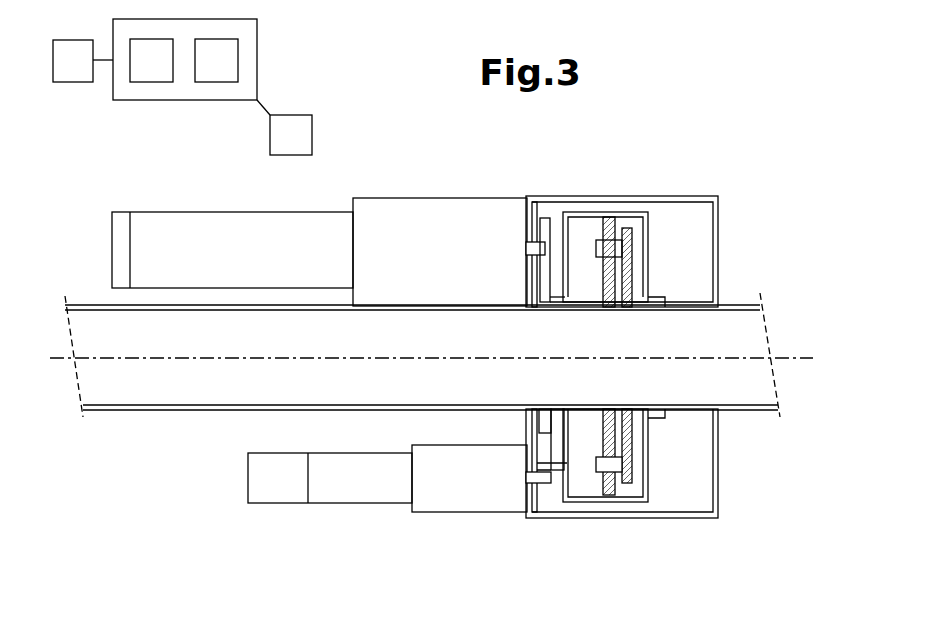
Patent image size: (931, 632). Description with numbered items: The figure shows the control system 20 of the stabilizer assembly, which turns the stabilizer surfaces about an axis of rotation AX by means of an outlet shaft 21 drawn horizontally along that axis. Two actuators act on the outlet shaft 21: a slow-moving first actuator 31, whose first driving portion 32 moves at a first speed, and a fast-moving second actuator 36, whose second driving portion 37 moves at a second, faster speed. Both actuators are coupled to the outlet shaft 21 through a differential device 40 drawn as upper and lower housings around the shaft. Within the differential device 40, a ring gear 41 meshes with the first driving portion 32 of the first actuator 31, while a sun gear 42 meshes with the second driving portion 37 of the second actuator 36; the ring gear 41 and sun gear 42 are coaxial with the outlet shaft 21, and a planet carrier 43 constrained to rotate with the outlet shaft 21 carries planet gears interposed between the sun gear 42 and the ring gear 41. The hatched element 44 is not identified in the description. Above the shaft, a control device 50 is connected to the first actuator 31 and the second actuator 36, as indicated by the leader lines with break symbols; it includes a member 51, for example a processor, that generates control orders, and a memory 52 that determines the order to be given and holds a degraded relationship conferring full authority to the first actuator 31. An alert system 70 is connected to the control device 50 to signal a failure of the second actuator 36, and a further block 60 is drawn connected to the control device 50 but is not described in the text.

The control system 20 is at (635, 152).
The outlet shaft 21 is at (107, 407).
The first actuator 31 is at (363, 510).
The first driving portion 32 is at (548, 480).
The second actuator 36 is at (435, 193).
The second driving portion 37 is at (536, 208).
The differential device 40 is at (713, 528).
The ring gear 41 is at (647, 496).
The sun gear 42 is at (545, 423).
The planet carrier 43 is at (630, 250).
The friction element 44 is at (608, 225).
The control device 50 is at (257, 33).
The member 51 is at (185, 207).
The memory 52 is at (290, 452).
The sensor 60 is at (60, 72).
The alert system 70 is at (278, 146).
The axis of rotation AX is at (787, 357).